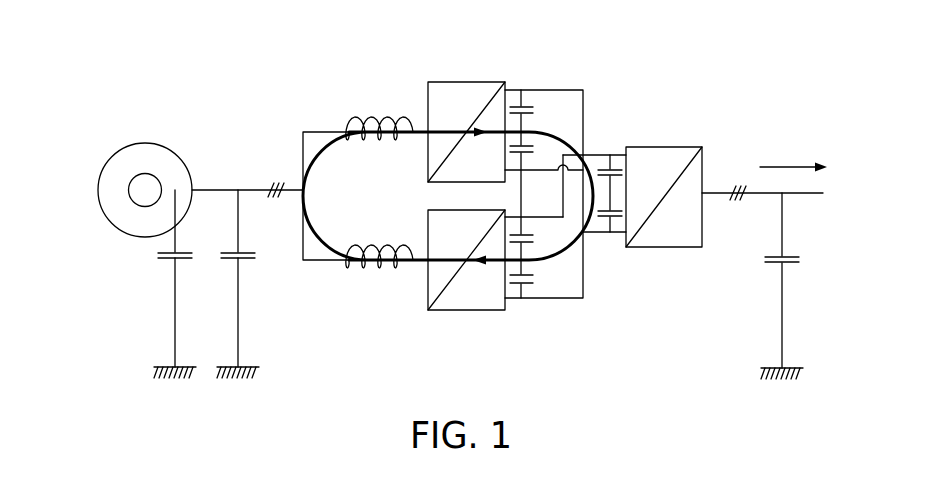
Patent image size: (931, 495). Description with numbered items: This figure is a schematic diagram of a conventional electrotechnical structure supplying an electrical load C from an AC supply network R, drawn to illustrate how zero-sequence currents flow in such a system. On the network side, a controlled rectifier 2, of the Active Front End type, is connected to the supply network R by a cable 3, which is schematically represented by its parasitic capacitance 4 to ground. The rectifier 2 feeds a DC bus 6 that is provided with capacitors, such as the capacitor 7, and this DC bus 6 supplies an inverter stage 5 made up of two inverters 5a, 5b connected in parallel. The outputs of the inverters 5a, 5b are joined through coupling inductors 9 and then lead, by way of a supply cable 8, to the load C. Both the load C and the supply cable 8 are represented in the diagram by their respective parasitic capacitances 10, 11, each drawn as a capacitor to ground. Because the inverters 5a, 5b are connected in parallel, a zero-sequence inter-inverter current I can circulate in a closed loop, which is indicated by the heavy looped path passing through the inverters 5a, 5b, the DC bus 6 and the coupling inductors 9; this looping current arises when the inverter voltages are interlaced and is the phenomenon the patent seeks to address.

The load C is at (98, 200).
The supply cable 8 is at (267, 183).
The parasitic capacitance of the load 10 is at (187, 260).
The parasitic capacitance of the supply cable 11 is at (233, 248).
The inverter stage 5 is at (403, 328).
The coupling inductors 9 is at (375, 264).
The inverter 5a is at (493, 82).
The inverter 5b is at (507, 310).
The DC bus 6 is at (556, 174).
The capacitor 7 is at (537, 285).
The zero-sequence inter-inverter current I is at (622, 112).
The controlled rectifier 2 is at (694, 146).
The cable 3 is at (812, 211).
The AC supply network R is at (802, 170).
The parasitic capacitance of the cable 4 is at (777, 264).